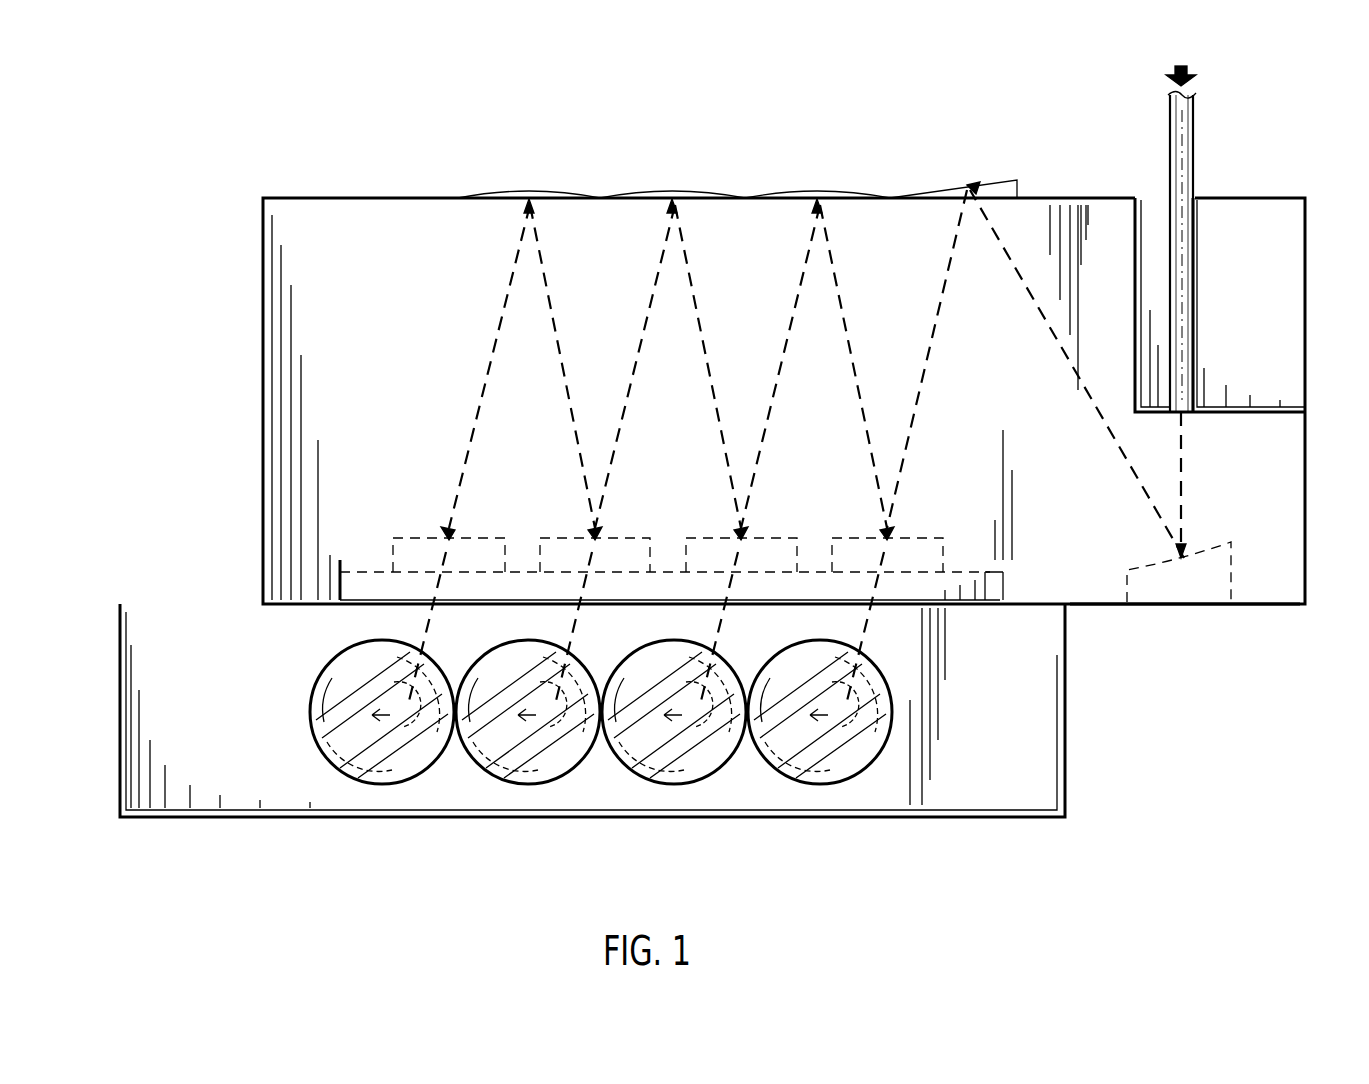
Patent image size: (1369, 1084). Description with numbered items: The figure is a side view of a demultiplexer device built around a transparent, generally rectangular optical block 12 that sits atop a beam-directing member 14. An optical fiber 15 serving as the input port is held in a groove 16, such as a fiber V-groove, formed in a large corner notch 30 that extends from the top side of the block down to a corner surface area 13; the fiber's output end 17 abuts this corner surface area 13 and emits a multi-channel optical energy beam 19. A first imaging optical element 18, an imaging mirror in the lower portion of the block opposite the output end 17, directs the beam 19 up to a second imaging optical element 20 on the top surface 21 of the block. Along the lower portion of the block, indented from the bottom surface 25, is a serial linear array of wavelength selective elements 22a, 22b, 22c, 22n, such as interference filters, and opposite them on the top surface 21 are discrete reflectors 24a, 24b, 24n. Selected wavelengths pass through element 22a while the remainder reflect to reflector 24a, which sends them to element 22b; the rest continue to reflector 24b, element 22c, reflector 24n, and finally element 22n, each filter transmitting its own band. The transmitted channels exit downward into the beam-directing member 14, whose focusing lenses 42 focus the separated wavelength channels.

The optical block 12 is at (350, 243).
The corner surface area 13 is at (1240, 408).
The beam-directing member 14 is at (232, 773).
The optical fiber 15 is at (1195, 142).
The groove 16 is at (1197, 262).
The output end 17 is at (1185, 415).
The first imaging optical element 18 is at (1198, 556).
The multi-channel optical energy beam 19 is at (1184, 497).
The second imaging optical element 20 is at (974, 184).
The top surface 21 is at (1081, 210).
The wavelength selective element 22n is at (485, 538).
The wavelength selective element 22c is at (629, 538).
The wavelength selective element 22b is at (775, 538).
The wavelength selective element 22a is at (921, 538).
The reflector 24n is at (503, 190).
The reflector 24b is at (650, 190).
The reflector 24a is at (797, 190).
The bottom surface 25 is at (1100, 607).
The corner notch 30 is at (1270, 285).
The focusing lenses 42 is at (355, 748).